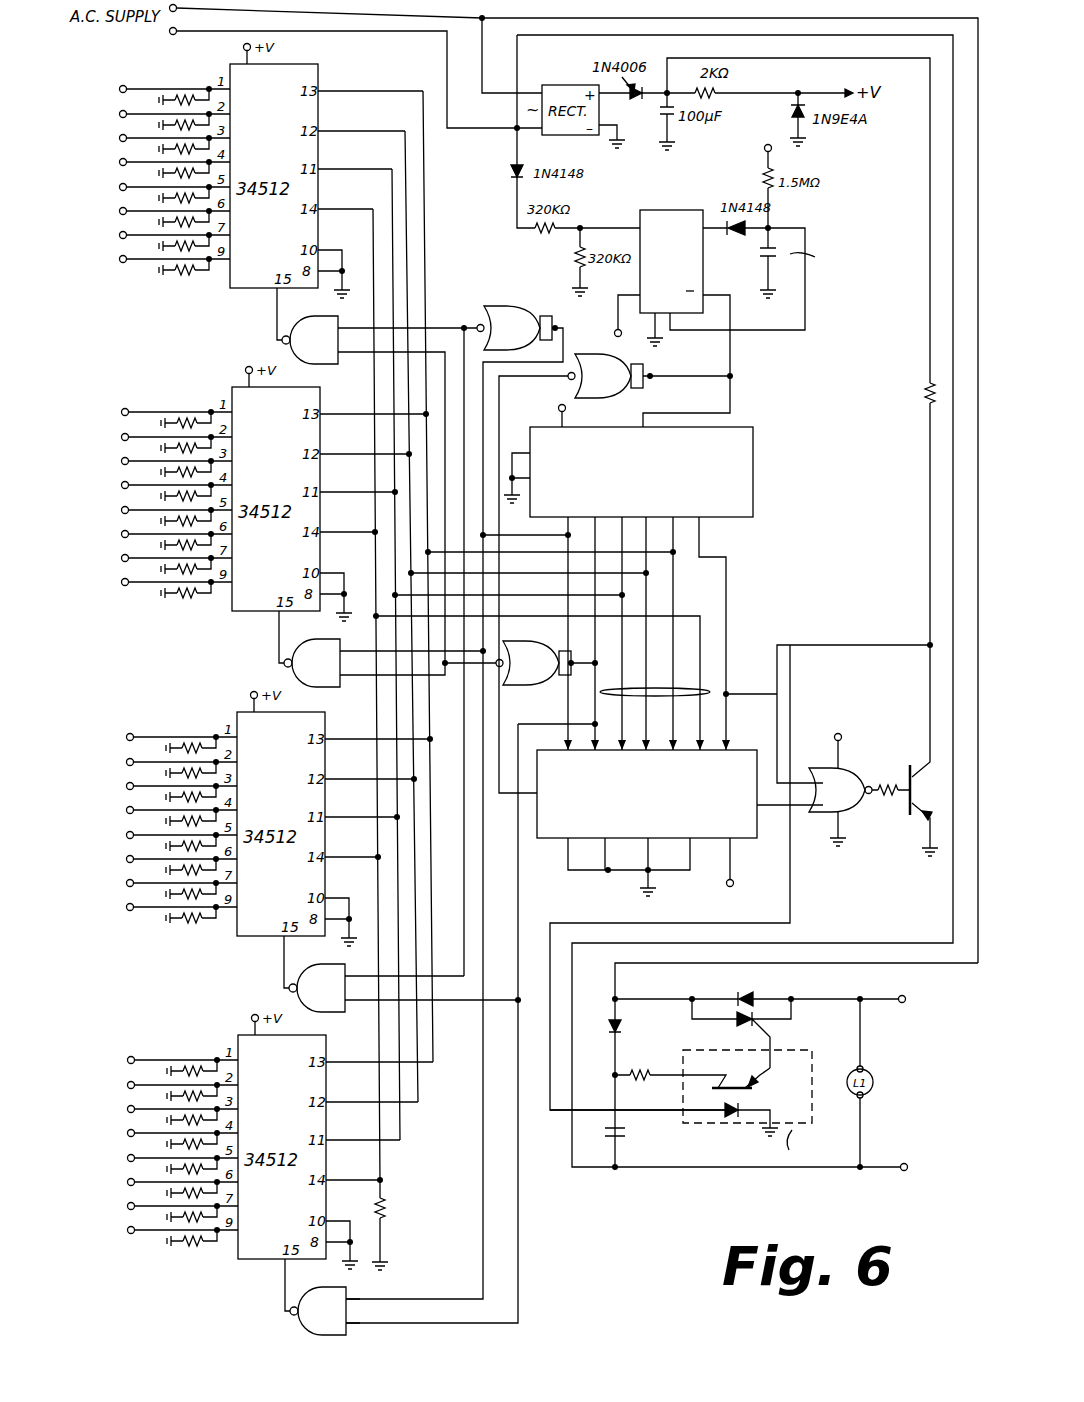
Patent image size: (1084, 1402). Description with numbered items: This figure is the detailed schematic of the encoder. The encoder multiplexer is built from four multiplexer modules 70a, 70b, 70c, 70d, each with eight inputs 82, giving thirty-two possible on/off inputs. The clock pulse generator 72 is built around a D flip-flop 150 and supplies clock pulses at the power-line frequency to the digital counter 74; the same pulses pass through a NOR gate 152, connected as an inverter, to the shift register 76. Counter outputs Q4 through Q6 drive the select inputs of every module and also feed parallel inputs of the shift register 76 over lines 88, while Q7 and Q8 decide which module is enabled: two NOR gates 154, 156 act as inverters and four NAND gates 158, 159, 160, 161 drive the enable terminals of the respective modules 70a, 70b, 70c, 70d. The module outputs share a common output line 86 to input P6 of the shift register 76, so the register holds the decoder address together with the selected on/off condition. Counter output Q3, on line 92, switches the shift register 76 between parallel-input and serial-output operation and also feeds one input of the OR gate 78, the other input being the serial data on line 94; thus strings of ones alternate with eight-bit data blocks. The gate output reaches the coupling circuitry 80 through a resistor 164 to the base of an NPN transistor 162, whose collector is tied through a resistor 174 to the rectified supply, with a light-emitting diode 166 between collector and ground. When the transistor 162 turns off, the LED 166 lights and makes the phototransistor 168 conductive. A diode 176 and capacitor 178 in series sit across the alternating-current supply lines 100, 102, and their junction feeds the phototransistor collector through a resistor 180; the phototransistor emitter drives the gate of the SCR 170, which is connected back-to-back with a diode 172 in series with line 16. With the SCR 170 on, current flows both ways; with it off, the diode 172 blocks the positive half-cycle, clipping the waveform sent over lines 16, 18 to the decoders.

The lines 82 is at (135, 104).
The multiplexer module 70a is at (312, 64).
The multiplexer module 70b is at (252, 390).
The multiplexer module 70c is at (318, 712).
The multiplexer module 70d is at (320, 1035).
The NAND gate 158 is at (308, 366).
The NAND gate 159 is at (322, 640).
The NAND gate 160 is at (328, 963).
The NAND gate 161 is at (310, 1340).
The NOR gate 154 is at (515, 307).
The NOR gate 152 is at (598, 362).
The NOR gate 156 is at (538, 643).
The D flip-flop 150 is at (706, 263).
The clock pulse generator 72 is at (818, 289).
The digital counter 74 is at (757, 467).
The resistor 174 is at (925, 409).
The output line 86 is at (700, 616).
The line 92 is at (727, 657).
The lines 88 is at (600, 695).
The OR gate 78 is at (847, 768).
The resistor 164 is at (894, 785).
The NPN transistor 162 is at (912, 830).
The line 94 is at (789, 835).
The shift register 76 is at (757, 845).
The line 102 is at (817, 917).
The line 100 is at (828, 965).
The diode 172 is at (760, 998).
The silicon controlled rectifier 170 is at (782, 1023).
The diode 176 is at (612, 1030).
The resistor 180 is at (656, 1078).
The phototransistor 168 is at (758, 1092).
The capacitor 178 is at (628, 1130).
The light-emitting diode 166 is at (735, 1120).
The coupling circuitry 80 is at (675, 1180).
The line 16 is at (896, 1010).
The line 18 is at (893, 1181).